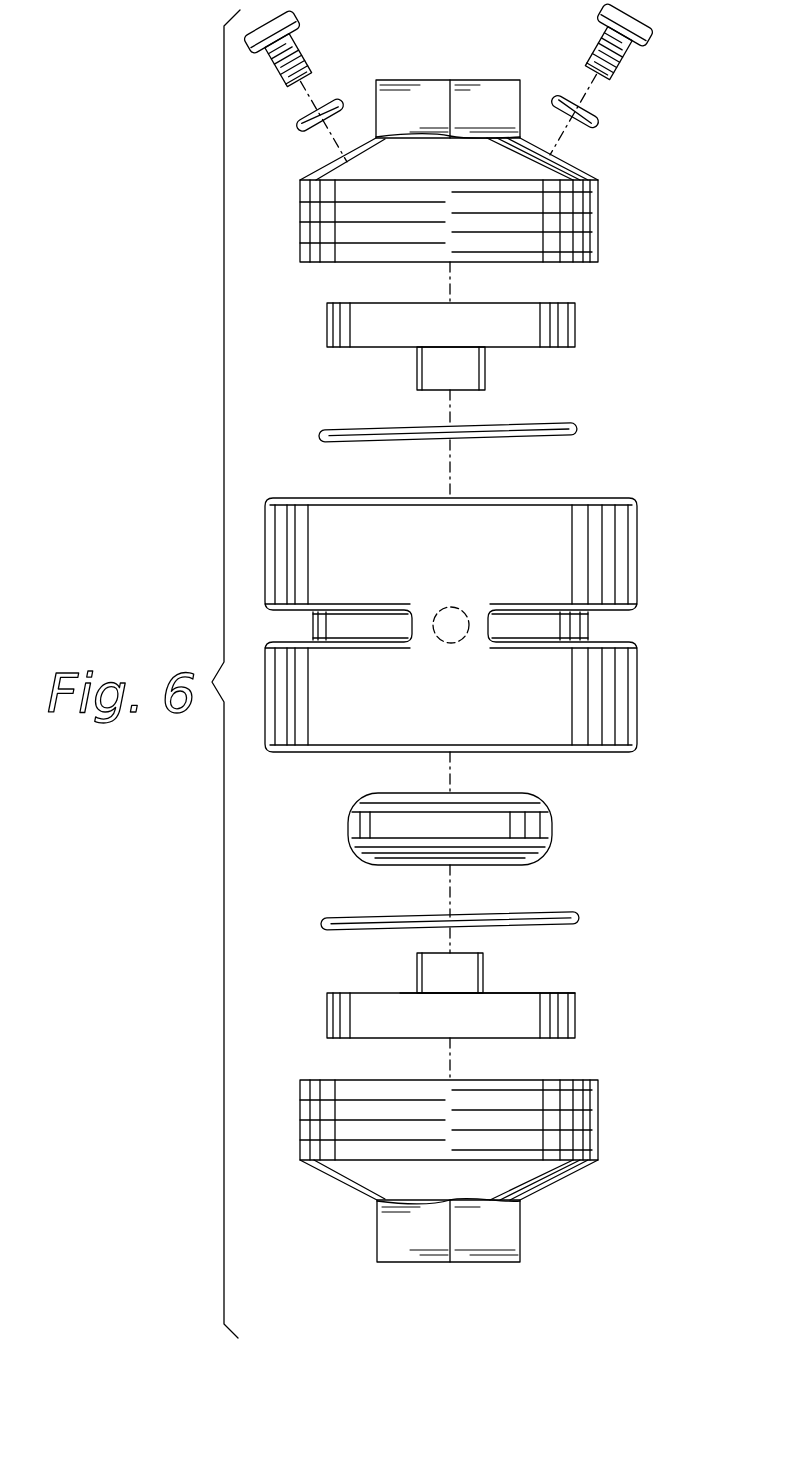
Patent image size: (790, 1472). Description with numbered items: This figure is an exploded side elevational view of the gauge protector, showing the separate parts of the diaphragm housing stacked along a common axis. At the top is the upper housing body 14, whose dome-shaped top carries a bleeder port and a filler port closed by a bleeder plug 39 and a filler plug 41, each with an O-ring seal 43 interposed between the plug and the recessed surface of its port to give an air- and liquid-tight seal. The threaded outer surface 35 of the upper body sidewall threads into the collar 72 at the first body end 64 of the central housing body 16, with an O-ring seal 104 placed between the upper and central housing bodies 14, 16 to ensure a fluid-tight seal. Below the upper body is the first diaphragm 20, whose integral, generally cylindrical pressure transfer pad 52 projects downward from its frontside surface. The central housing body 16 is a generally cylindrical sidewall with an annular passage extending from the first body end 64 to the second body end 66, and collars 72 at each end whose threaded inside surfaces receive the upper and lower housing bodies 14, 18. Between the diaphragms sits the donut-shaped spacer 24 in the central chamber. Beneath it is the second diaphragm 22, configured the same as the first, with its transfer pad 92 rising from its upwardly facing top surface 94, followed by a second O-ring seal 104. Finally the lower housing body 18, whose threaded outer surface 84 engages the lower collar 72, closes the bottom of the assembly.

The upper housing body 14 is at (482, 171).
The central housing body 16 is at (484, 613).
The lower housing body 18 is at (484, 1171).
The first diaphragm 20 is at (483, 346).
The second diaphragm 22 is at (478, 995).
The donut-shaped spacer 24 is at (548, 832).
The outer surface of the upper body sidewall 35 is at (598, 218).
The bleeder plug 39 is at (655, 33).
The filler plug 41 is at (299, 16).
The O-ring seal 43 is at (338, 100).
The pressure transfer pad 52 is at (472, 379).
The first body end 64 is at (620, 498).
The second body end 66 is at (630, 750).
The collars 72 is at (618, 530).
The outer surface of the lower body sidewall 84 is at (598, 1110).
The transfer pad 92 is at (467, 985).
The top surface 94 is at (545, 993).
The O-ring seal 104 is at (582, 428).